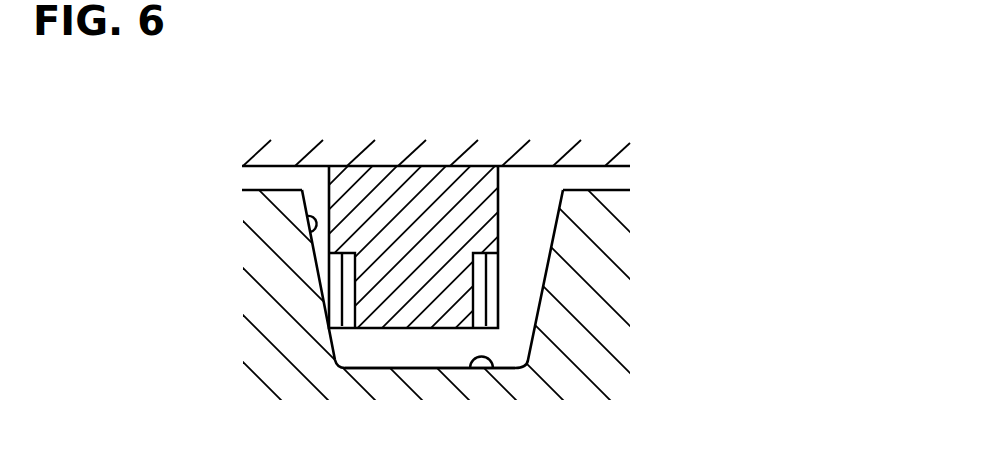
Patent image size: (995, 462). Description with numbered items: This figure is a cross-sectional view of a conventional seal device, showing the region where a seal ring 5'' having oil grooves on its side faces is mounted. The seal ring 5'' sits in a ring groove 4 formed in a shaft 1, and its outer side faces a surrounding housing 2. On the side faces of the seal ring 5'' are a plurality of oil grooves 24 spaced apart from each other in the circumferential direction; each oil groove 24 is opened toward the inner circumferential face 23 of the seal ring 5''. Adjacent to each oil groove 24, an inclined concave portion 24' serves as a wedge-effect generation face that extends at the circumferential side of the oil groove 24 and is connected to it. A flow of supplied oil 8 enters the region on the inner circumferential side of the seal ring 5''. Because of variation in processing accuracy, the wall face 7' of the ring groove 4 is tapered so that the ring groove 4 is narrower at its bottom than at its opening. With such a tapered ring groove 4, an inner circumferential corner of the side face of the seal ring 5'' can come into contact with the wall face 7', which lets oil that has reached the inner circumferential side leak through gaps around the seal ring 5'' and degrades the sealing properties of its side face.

The shaft 1 is at (649, 301).
The housing 2 is at (547, 160).
The ring groove 4 is at (493, 370).
The seal ring 5'' is at (410, 231).
The wall face of the ring groove 7' is at (237, 230).
The flow of supplied oil 8 is at (628, 180).
The inner circumferential face 23 is at (420, 330).
The oil groove 24 is at (445, 284).
The inclined concave portion 24' is at (447, 333).